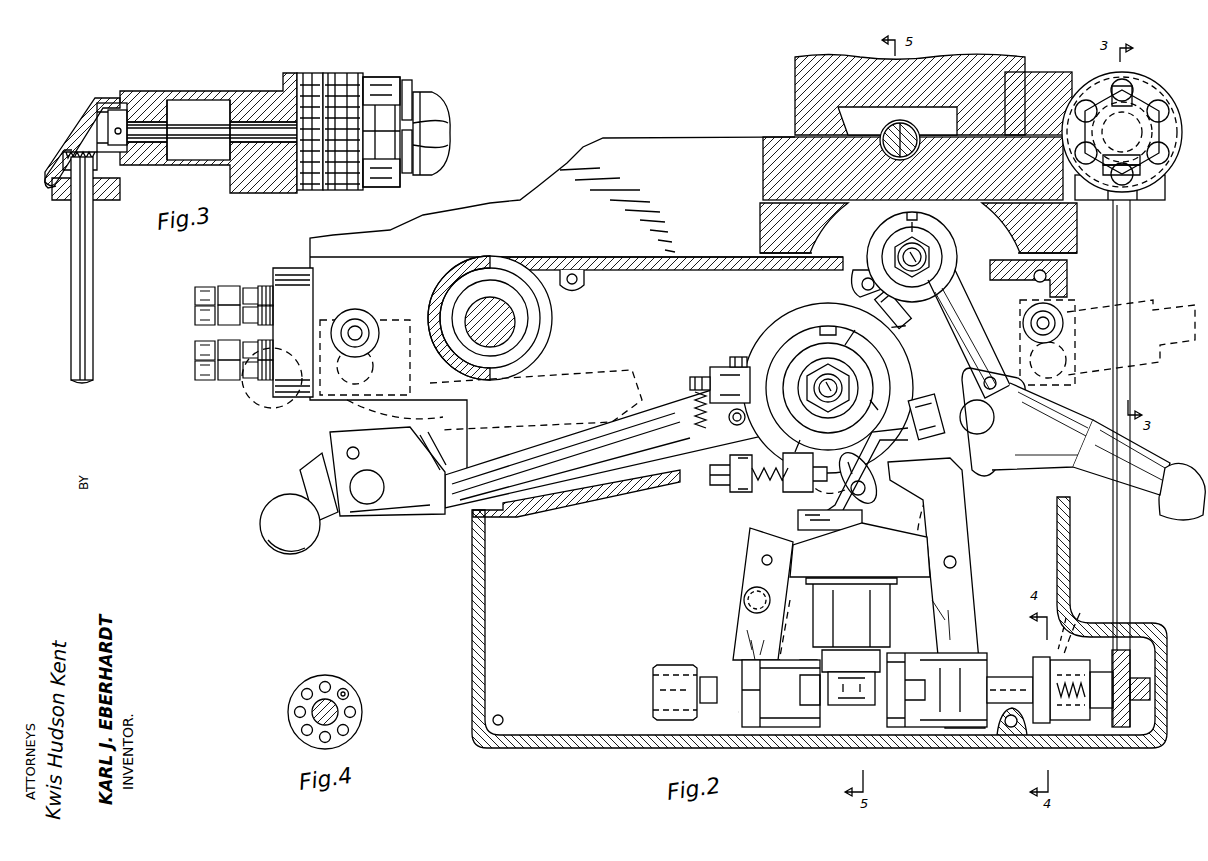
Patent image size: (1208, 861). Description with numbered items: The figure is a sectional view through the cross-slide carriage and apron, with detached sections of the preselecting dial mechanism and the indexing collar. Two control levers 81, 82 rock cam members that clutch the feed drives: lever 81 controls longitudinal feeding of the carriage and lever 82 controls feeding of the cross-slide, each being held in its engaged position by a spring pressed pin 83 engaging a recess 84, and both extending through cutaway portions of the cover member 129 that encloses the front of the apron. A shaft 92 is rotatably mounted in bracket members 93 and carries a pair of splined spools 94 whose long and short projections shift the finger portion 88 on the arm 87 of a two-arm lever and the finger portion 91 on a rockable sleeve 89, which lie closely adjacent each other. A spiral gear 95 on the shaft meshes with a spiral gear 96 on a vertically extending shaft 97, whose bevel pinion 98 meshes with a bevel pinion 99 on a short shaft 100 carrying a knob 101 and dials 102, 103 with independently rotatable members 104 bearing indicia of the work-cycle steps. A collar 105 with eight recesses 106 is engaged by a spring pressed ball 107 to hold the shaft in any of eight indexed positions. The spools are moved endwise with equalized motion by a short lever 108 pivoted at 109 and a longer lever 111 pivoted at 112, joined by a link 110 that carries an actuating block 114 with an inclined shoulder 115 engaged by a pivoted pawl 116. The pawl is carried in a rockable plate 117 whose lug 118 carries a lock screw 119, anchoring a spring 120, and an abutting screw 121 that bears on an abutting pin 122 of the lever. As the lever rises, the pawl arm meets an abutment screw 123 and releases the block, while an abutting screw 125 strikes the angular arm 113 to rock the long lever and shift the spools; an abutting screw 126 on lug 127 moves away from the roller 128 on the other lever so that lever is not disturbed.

In FIG. 2, the control lever 81 is at (648, 402).
In FIG. 2, the control lever 82 is at (942, 285).
In FIG. 2, the spring pressed pin 83 is at (347, 452).
In FIG. 2, the recess 84 is at (357, 330).
In FIG. 2, the arm 87 is at (808, 720).
In FIG. 2, the finger portion 88 is at (850, 704).
In FIG. 2, the rockable sleeve 89 is at (862, 636).
In FIG. 2, the finger portion 91 is at (850, 668).
In FIG. 4, the shaft 92 is at (339, 716).
In FIG. 2, the shaft 92 is at (1010, 676).
In FIG. 2, the bracket member 93 is at (676, 722).
In FIG. 2, the spool 94 is at (785, 728).
In FIG. 2, the spiral gear 95 is at (1131, 668).
In FIG. 2, the spiral gear 96 is at (1150, 688).
In FIG. 3, the vertically extending shaft 97 is at (93, 272).
In FIG. 2, the vertically extending shaft 97 is at (1133, 566).
In FIG. 3, the bevel pinion 98 is at (52, 150).
In FIG. 2, the bevel pinion 98 is at (1172, 160).
In FIG. 3, the bevel pinion 99 is at (92, 104).
In FIG. 2, the bevel pinion 99 is at (1173, 122).
In FIG. 3, the shaft 100 is at (180, 126).
In FIG. 3, the knob 101 is at (447, 123).
In FIG. 3, the dial 102 is at (308, 73).
In FIG. 3, the dial 103 is at (342, 73).
In FIG. 3, the rotatable member 104 is at (412, 92).
In FIG. 2, the rotatable member 104 is at (1132, 86).
In FIG. 4, the collar 105 is at (340, 683).
In FIG. 2, the collar 105 is at (1040, 724).
In FIG. 4, the recess 106 is at (347, 696).
In FIG. 2, the spring pressed ball 107 is at (1078, 618).
In FIG. 2, the short lever 108 is at (752, 628).
In FIG. 2, the pivot 109 is at (744, 600).
In FIG. 2, the link 110 is at (770, 528).
In FIG. 2, the lever 111 is at (968, 600).
In FIG. 2, the pivot 112 is at (957, 475).
In FIG. 2, the arm 113 is at (863, 462).
In FIG. 2, the actuating block 114 is at (823, 530).
In FIG. 2, the inclined shoulder 115 is at (852, 516).
In FIG. 2, the pivoted pawl 116 is at (808, 490).
In FIG. 2, the rockable plate 117 is at (808, 322).
In FIG. 2, the lug 118 is at (722, 366).
In FIG. 2, the lock screw 119 is at (697, 377).
In FIG. 2, the spring 120 is at (698, 395).
In FIG. 2, the abutting screw 121 is at (740, 357).
In FIG. 2, the abutting pin 122 is at (730, 422).
In FIG. 2, the abutment screw 123 is at (752, 480).
In FIG. 2, the abutting screw 125 is at (925, 440).
In FIG. 2, the abutting screw 126 is at (906, 318).
In FIG. 2, the lug 127 is at (857, 285).
In FIG. 2, the roller 128 is at (870, 250).
In FIG. 2, the cover member 129 is at (470, 592).